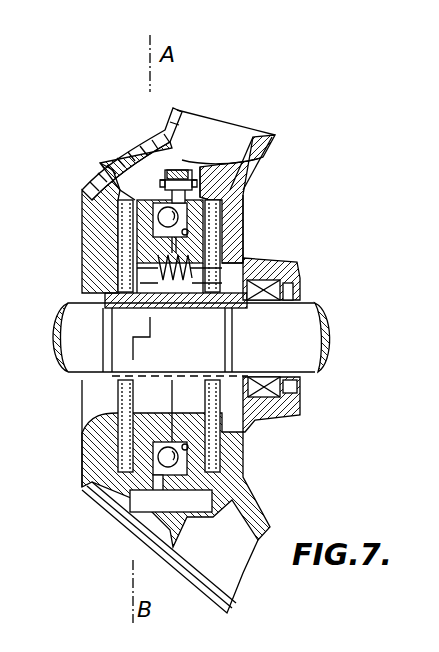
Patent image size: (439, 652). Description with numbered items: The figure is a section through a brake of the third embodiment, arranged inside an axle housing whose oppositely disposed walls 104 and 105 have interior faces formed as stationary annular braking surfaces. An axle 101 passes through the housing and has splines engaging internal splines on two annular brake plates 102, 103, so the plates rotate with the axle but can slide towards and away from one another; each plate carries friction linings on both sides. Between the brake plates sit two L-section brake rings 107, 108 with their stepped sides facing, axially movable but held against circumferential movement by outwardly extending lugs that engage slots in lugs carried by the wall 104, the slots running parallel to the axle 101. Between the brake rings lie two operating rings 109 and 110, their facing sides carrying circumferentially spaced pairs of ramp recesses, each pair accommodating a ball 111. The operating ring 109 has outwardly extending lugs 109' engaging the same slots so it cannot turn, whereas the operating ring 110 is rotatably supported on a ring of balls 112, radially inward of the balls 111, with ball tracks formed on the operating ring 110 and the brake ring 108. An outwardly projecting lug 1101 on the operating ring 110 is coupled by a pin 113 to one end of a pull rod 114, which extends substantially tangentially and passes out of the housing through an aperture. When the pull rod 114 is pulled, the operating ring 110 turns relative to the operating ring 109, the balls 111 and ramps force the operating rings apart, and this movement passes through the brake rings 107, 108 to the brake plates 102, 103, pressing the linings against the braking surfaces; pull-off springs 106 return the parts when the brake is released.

The axle 101 is at (300, 353).
The brake plate 102 is at (127, 252).
The brake plate 103 is at (262, 263).
The wall 104 is at (102, 212).
The wall 105 is at (228, 223).
The pull-off spring 106 is at (190, 280).
The brake ring 107 is at (130, 188).
The brake ring 108 is at (227, 212).
The operating ring 109 is at (123, 493).
The lug 109' is at (138, 547).
The operating ring 110 is at (233, 488).
The lug 1101 is at (195, 178).
The ball 111 is at (158, 457).
The ball 112 is at (232, 455).
The pin 113 is at (185, 168).
The pull rod 114 is at (265, 150).